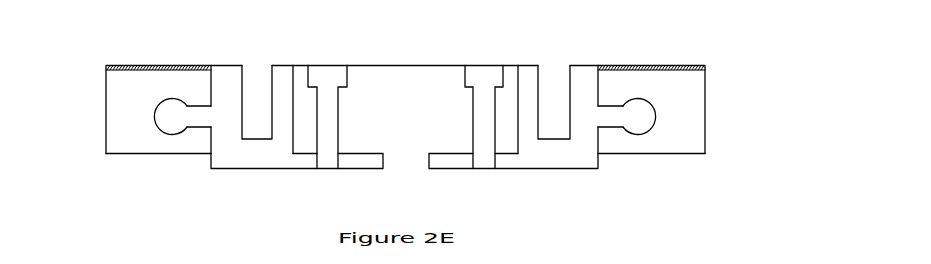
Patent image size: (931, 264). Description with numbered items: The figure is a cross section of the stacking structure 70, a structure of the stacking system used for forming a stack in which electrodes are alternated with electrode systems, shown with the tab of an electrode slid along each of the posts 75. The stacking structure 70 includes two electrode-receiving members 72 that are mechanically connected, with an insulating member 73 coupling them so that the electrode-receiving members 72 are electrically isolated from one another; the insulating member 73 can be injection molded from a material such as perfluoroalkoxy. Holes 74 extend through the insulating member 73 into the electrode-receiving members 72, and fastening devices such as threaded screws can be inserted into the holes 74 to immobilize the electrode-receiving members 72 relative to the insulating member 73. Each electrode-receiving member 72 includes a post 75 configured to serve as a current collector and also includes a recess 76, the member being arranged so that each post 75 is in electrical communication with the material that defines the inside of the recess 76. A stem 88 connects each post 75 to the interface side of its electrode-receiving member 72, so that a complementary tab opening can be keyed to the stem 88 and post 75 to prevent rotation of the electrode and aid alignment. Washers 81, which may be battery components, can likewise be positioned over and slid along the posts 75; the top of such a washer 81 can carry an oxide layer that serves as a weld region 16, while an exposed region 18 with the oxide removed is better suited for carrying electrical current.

The weld region 16 is at (143, 63).
The exposed region 18 is at (117, 105).
The stacking structure 70 is at (323, 44).
The electrode-receiving member 72 is at (240, 158).
The insulating member 73 is at (360, 64).
The hole 74 is at (340, 128).
The post 75 is at (162, 100).
The recess 76 is at (272, 80).
The washer 81 is at (117, 140).
The stem 88 is at (200, 105).